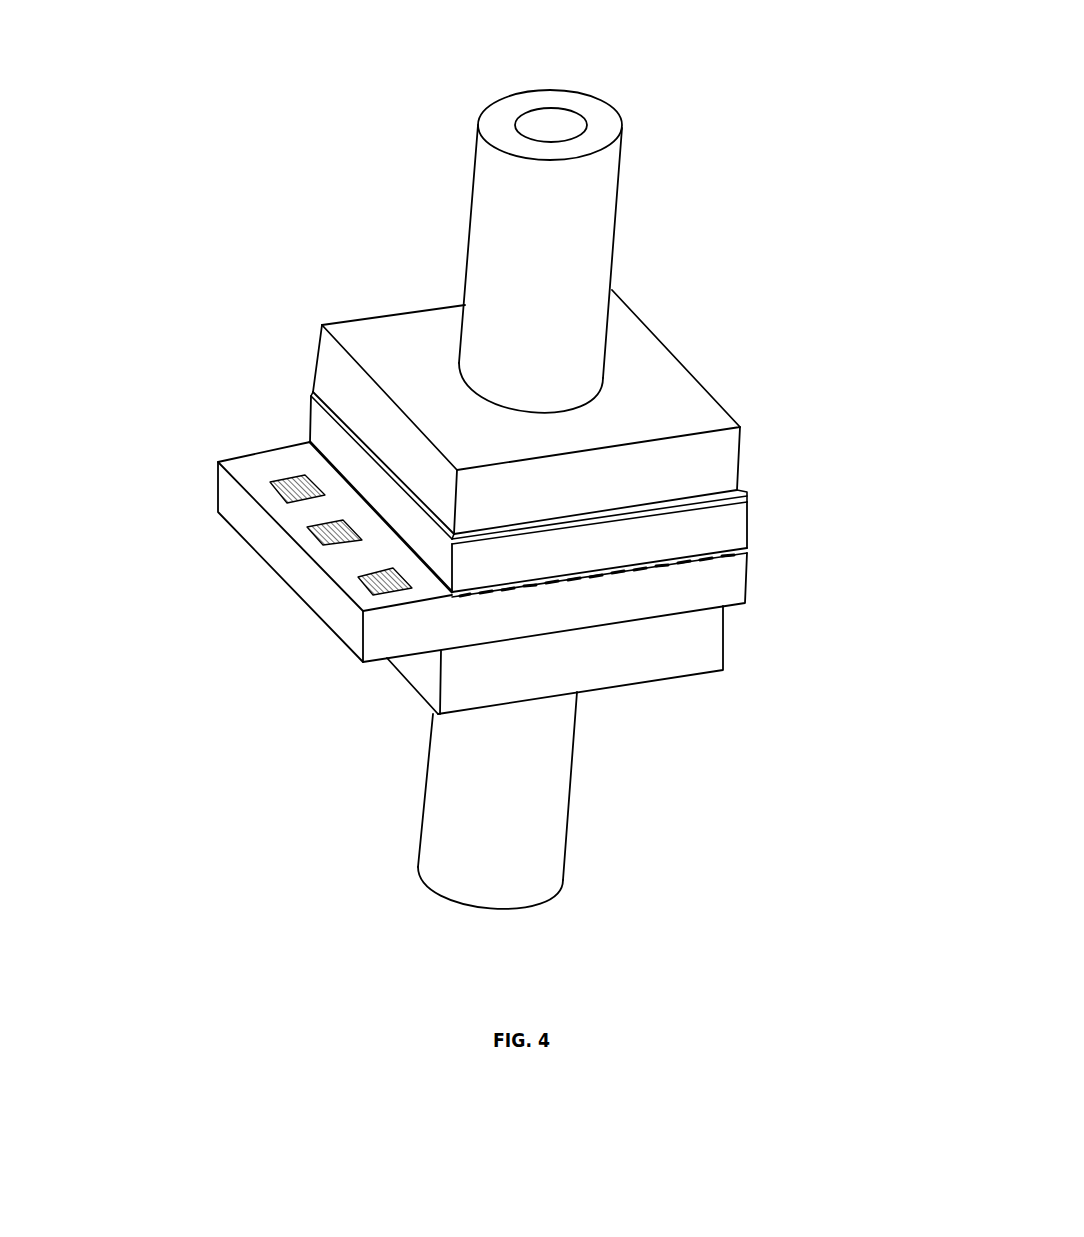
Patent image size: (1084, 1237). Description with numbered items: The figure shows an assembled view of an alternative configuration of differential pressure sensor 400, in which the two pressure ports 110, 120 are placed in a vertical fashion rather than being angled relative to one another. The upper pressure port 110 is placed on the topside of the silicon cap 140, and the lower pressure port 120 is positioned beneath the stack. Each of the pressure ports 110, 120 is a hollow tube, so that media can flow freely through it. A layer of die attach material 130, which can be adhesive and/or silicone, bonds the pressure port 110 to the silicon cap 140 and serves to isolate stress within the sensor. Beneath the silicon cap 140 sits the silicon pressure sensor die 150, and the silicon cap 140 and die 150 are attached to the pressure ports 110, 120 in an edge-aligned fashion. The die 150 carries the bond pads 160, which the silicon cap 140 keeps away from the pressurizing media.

The differential pressure sensor 400 is at (796, 63).
The pressure port 110 is at (602, 257).
The pressure port 120 is at (553, 788).
The die attach material 130 is at (735, 489).
The silicon cap 140 is at (723, 525).
The silicon pressure sensor die 150 is at (723, 580).
The bond pads 160 is at (358, 579).